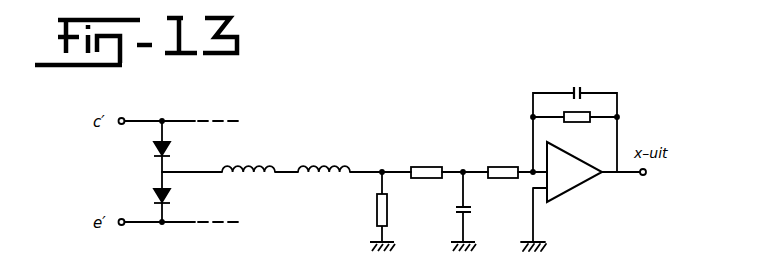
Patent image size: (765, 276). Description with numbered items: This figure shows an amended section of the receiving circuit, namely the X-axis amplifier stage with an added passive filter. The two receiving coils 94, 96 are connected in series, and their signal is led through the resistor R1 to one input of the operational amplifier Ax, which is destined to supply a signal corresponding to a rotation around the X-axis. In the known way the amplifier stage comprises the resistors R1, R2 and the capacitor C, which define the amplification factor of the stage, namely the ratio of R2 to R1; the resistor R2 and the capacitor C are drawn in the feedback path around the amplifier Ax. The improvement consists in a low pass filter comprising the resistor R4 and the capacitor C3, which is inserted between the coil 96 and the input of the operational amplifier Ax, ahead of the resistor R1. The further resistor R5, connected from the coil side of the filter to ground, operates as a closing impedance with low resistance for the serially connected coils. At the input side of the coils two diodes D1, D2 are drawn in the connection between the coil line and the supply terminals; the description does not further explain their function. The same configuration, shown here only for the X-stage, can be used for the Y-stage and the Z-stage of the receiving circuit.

The coil 94 is at (248, 167).
The coil 96 is at (316, 167).
The diode D1 is at (171, 148).
The diode D2 is at (171, 196).
The resistor R1 is at (503, 162).
The resistor R2 is at (575, 142).
The resistor R4 is at (426, 162).
The further resistor R5 is at (390, 211).
The capacitor C is at (575, 93).
The capacitor C3 is at (473, 211).
The operational amplifier Ax is at (568, 175).